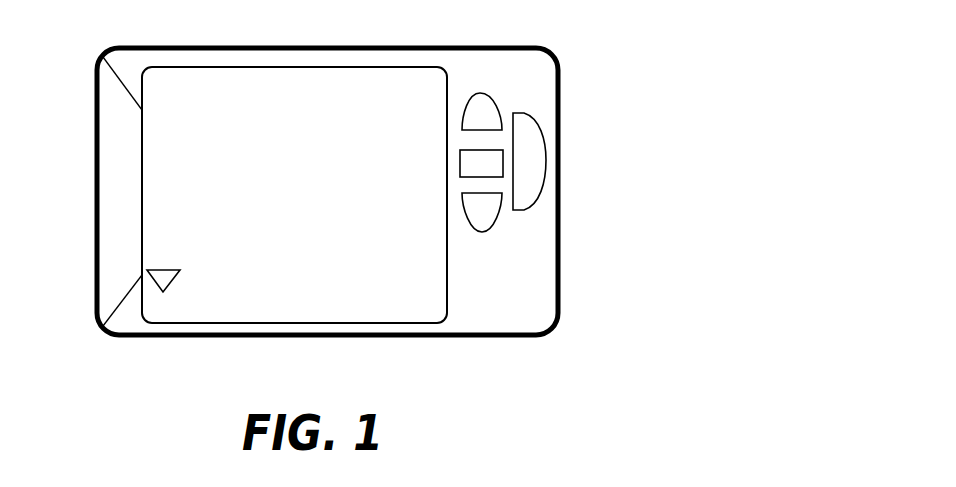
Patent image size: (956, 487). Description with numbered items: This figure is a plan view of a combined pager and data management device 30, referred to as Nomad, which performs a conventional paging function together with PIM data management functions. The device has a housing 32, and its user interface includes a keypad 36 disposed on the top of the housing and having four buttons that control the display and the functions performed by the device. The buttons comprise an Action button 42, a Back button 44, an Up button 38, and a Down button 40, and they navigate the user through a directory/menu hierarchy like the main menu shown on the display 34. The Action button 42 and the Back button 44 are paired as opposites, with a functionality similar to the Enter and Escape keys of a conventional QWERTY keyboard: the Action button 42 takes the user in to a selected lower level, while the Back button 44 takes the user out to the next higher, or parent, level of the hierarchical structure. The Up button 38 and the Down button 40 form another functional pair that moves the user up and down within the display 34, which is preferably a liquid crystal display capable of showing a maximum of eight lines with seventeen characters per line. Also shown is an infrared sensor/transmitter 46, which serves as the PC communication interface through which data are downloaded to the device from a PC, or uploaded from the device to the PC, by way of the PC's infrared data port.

The pager and data management device 30 is at (332, 225).
The housing 32 is at (562, 82).
The display 34 is at (356, 67).
The keypad 36 is at (473, 190).
The Up button 38 is at (494, 104).
The Down button 40 is at (507, 221).
The Action button 42 is at (460, 166).
The Back button 44 is at (545, 156).
The infrared sensor/transmitter 46 is at (96, 200).